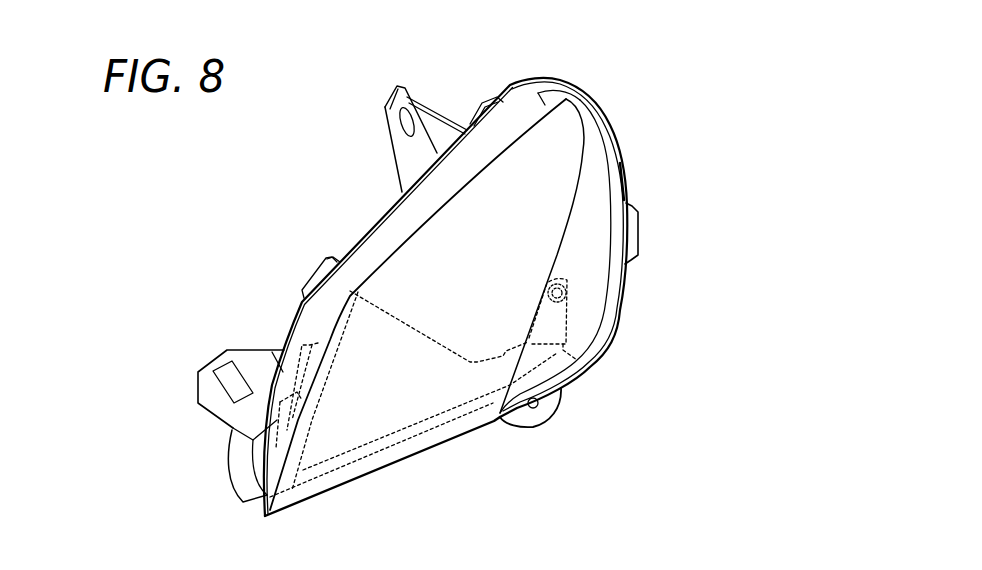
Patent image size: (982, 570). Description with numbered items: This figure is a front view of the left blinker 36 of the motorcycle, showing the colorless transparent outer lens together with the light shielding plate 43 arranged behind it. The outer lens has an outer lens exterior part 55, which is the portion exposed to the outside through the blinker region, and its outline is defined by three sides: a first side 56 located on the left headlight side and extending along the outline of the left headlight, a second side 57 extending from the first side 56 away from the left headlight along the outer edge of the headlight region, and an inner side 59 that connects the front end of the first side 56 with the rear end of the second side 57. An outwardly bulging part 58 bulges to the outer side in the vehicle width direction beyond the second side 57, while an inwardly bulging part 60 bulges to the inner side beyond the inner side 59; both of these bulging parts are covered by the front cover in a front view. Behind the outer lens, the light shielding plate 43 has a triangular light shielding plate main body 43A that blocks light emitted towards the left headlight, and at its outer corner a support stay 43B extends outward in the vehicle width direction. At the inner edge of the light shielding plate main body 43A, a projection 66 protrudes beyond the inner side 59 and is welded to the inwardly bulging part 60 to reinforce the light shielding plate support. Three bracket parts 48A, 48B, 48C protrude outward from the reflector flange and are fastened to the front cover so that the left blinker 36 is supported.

The left blinker 36 is at (646, 74).
The light shielding plate 43 is at (380, 413).
The light shielding plate main body 43A is at (358, 335).
The support stay 43B is at (577, 360).
The bracket part 48A is at (383, 123).
The bracket part 48B is at (197, 393).
The bracket part 48C is at (550, 412).
The outer lens exterior part 55 is at (530, 160).
The first side 56 is at (443, 452).
The second side 57 is at (562, 237).
The outwardly bulging part 58 is at (592, 268).
The inner side 59 is at (402, 242).
The inwardly bulging part 60 is at (313, 329).
The projection 66 is at (280, 402).